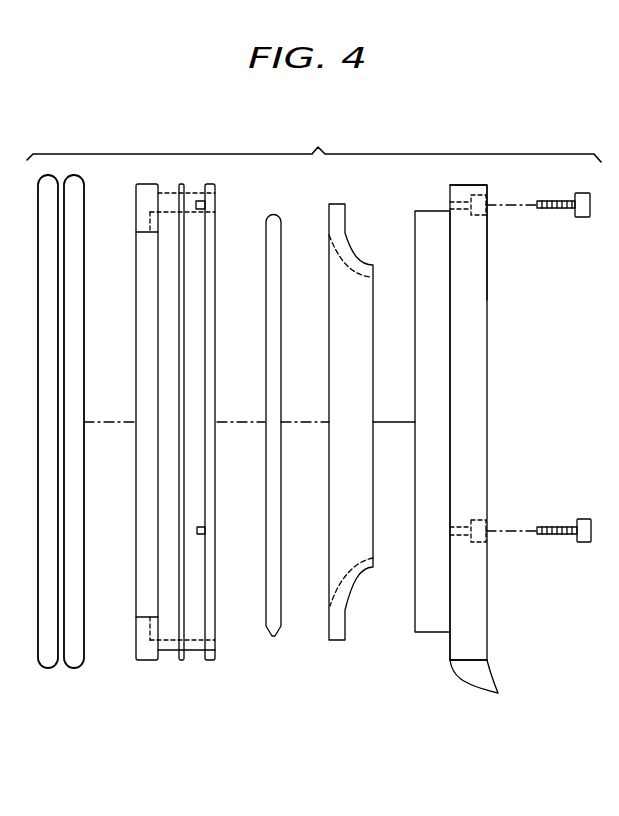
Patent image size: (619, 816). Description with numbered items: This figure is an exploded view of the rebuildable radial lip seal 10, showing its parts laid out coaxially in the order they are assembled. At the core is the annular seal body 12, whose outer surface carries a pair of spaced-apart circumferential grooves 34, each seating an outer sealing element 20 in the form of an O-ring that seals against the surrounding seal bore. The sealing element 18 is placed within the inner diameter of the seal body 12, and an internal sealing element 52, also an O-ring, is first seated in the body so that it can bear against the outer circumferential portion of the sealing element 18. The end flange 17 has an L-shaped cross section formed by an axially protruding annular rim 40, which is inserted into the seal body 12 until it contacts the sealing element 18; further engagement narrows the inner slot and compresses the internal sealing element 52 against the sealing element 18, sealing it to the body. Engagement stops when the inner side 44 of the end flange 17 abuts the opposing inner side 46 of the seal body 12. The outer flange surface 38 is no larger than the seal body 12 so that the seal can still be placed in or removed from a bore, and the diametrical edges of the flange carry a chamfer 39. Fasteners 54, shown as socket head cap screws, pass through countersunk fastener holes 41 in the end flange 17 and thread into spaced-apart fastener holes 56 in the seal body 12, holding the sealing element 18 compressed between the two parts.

The rebuildable radial lip seal 10 is at (322, 142).
The seal body 12 is at (136, 640).
The end flange 17 is at (488, 636).
The sealing element 18 is at (337, 642).
The outer sealing element 20 is at (79, 667).
The circumferential grooves 34 is at (198, 650).
The outer flange surface 38 is at (467, 185).
The chamfer 39 is at (494, 687).
The annular rim 40 is at (432, 632).
The fastener holes 41 is at (486, 209).
The inner side 44 is at (415, 615).
The inner side 46 is at (215, 660).
The internal sealing element 52 is at (273, 637).
The fasteners 54 is at (557, 208).
The fastener holes 56 is at (205, 205).